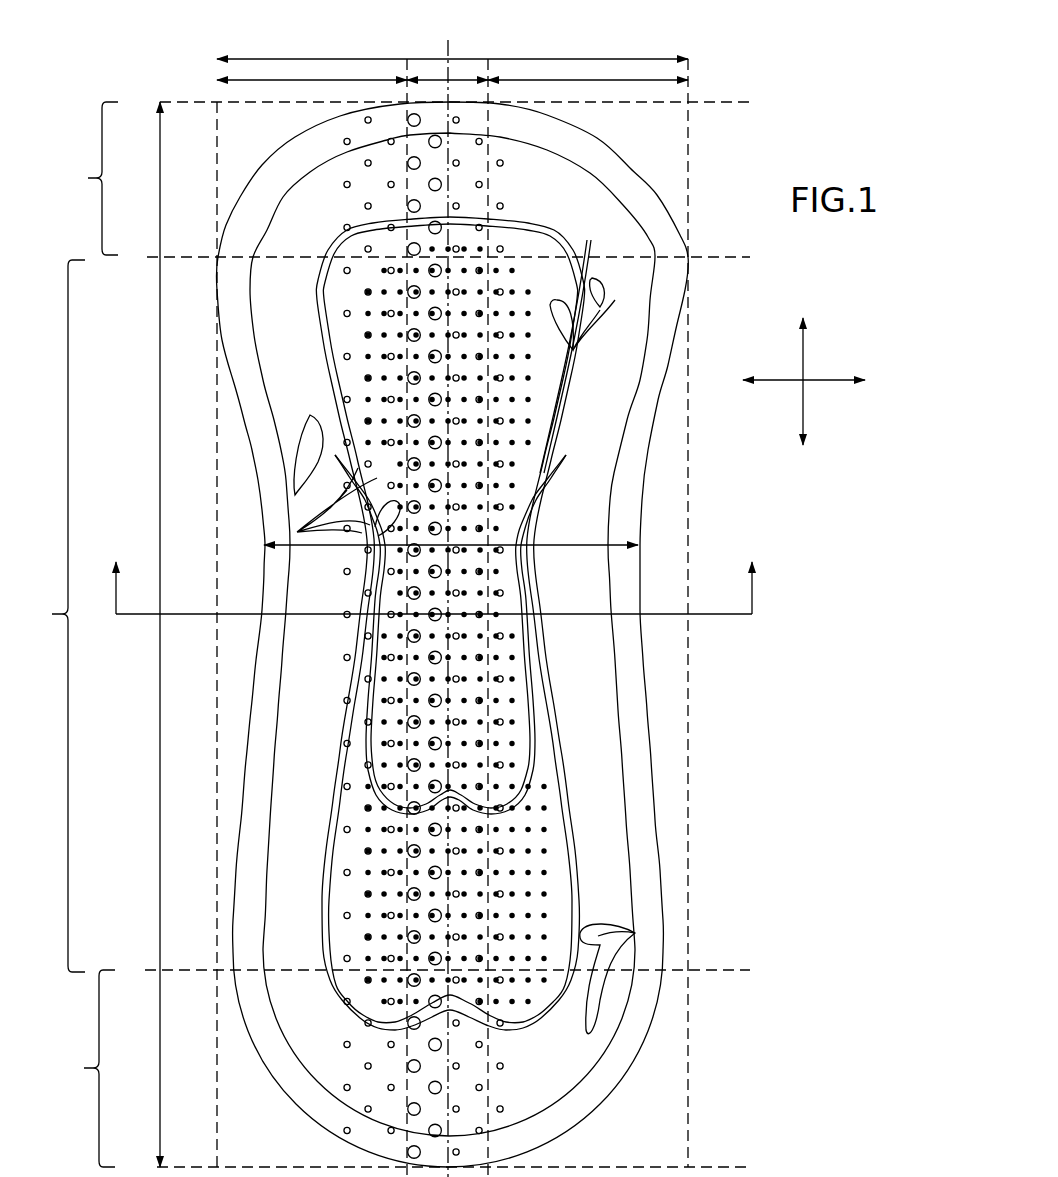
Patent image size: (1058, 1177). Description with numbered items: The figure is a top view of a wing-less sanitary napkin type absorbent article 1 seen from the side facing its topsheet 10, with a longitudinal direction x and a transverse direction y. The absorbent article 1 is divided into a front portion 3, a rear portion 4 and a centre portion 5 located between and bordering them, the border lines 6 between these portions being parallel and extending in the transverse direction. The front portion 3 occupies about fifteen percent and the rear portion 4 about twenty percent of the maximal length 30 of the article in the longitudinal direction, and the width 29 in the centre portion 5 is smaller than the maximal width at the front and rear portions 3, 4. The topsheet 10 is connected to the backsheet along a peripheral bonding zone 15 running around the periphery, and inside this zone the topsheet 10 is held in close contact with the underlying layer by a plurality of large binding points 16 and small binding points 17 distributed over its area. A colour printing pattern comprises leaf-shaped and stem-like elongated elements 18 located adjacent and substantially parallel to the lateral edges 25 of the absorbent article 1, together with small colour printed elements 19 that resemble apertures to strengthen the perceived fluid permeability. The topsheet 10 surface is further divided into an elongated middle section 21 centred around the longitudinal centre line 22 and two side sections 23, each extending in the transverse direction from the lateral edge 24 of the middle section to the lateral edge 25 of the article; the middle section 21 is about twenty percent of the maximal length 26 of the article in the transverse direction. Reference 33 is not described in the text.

The absorbent article 1 is at (822, 83).
The front portion 3 is at (82, 178).
The rear portion 4 is at (84, 1068).
The centre portion 5 is at (399, 616).
The border lines 6 is at (713, 257).
The topsheet 10 is at (598, 705).
The peripheral bonding zone 15 is at (643, 878).
The large binding points 16 is at (462, 118).
The small binding points 17 is at (503, 163).
The printed leaf-shaped elements and elongated stem-like elements 18 is at (585, 270).
The small colour printed elements 19 is at (600, 292).
The middle section 21 is at (468, 80).
The longitudinal centre line 22 is at (447, 843).
The side sections 23 is at (343, 80).
The lateral edge of the middle section 24 is at (405, 127).
The lateral edges of the absorbent article 25 is at (222, 335).
The maximal length in the transverse direction 26 is at (250, 59).
The width in the centre portion 29 is at (587, 540).
The maximal length in the longitudinal direction 30 is at (160, 378).
The apertures in rear region 33 is at (488, 1080).